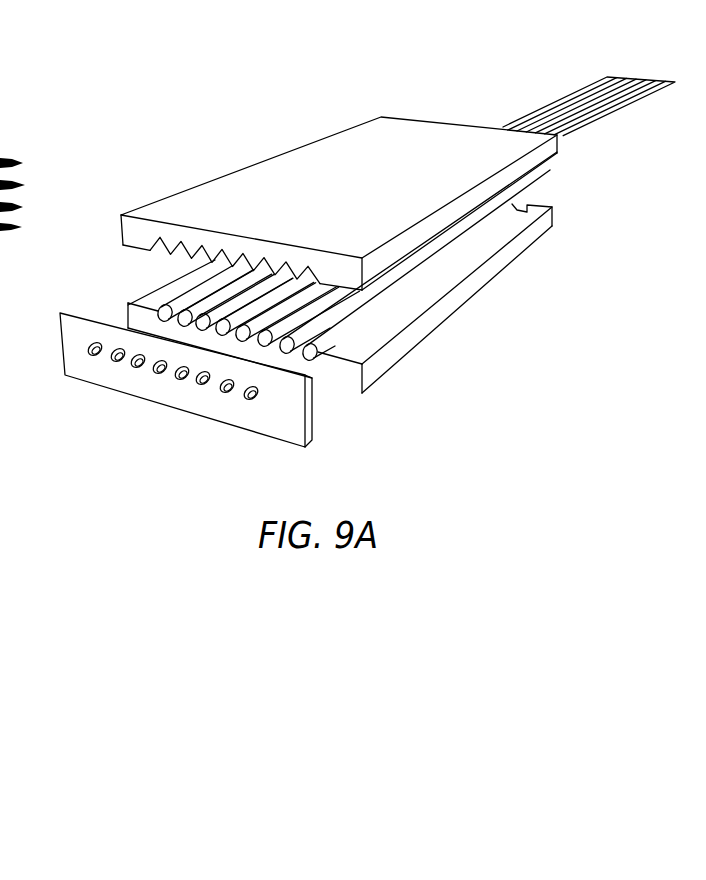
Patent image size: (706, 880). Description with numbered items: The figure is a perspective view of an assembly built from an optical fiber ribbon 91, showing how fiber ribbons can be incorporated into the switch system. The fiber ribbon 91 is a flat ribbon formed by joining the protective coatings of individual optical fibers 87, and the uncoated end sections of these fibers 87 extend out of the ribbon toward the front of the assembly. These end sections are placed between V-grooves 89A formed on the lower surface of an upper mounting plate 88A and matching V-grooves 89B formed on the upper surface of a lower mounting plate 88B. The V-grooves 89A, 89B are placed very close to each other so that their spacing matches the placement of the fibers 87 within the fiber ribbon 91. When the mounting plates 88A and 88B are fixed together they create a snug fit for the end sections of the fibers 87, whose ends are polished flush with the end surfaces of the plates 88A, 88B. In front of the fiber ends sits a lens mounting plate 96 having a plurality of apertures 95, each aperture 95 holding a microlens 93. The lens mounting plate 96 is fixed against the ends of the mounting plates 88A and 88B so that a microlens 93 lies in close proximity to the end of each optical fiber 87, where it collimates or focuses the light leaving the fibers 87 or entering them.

The optical fibers 87 is at (605, 78).
The mounting plate 88A is at (339, 200).
The mounting plate 88B is at (349, 298).
The V-grooves 89A is at (167, 258).
The V-grooves 89B is at (294, 350).
The fiber ribbon 91 is at (614, 148).
The microlenses 93 is at (189, 385).
The apertures 95 is at (242, 409).
The lens mounting plate 96 is at (195, 403).